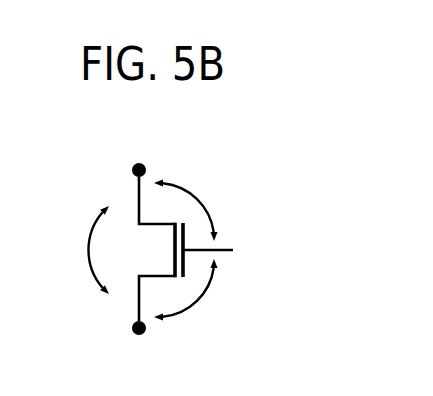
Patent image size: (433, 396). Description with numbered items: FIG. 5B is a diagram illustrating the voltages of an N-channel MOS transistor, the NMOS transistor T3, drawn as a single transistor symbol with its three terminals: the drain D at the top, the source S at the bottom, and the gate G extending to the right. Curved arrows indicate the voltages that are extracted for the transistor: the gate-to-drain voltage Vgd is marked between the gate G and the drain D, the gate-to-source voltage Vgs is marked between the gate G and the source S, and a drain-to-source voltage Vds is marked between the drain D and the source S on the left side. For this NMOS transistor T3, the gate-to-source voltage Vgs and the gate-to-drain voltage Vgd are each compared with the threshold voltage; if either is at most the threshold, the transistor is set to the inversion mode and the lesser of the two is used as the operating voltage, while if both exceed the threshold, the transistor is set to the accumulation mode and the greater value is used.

The NMOS transistor T3 is at (166, 248).
The drain D is at (139, 154).
The source S is at (139, 343).
The gate G is at (244, 250).
The gate-to-drain voltage Vgd is at (192, 206).
The gate-to-source voltage Vgs is at (191, 296).
The drain-source voltage Vds is at (81, 250).